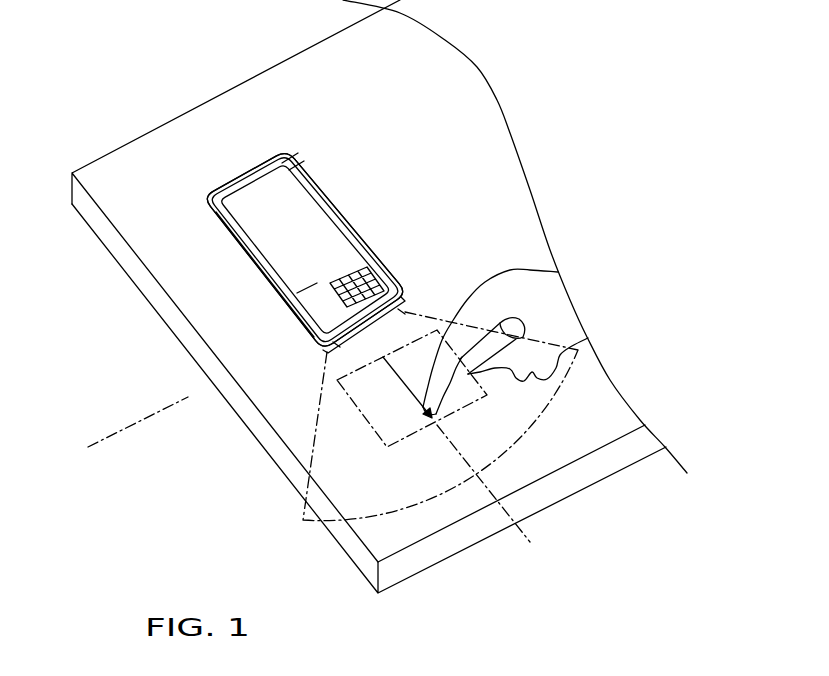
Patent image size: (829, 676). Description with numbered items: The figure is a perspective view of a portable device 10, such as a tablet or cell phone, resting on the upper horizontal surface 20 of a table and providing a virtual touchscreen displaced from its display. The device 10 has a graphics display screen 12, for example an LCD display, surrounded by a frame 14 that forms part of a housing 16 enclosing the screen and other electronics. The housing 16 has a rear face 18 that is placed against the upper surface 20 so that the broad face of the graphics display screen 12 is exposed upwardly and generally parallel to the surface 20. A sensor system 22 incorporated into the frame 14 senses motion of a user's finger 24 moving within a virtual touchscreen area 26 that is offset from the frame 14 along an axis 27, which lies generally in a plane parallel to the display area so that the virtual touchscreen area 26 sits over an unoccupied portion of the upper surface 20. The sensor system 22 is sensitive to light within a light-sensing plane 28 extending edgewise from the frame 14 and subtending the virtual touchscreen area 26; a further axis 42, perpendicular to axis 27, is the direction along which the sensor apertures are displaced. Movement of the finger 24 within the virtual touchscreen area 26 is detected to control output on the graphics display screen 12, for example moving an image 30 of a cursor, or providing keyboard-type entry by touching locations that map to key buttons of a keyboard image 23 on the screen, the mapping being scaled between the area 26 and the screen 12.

The portable device 10 is at (247, 137).
The graphics display screen 12 is at (237, 183).
The frame 14 is at (207, 194).
The housing 16 is at (350, 188).
The rear face 18 is at (241, 282).
The upper horizontal surface 20 is at (447, 67).
The sensor system 22 is at (404, 310).
The keyboard image 23 is at (381, 287).
The user's finger 24 is at (440, 379).
The virtual touchscreen area 26 is at (407, 443).
The axis 27 is at (510, 506).
The light-sensing plane 28 is at (387, 517).
The image 30 is at (313, 307).
The axis 42 is at (138, 423).